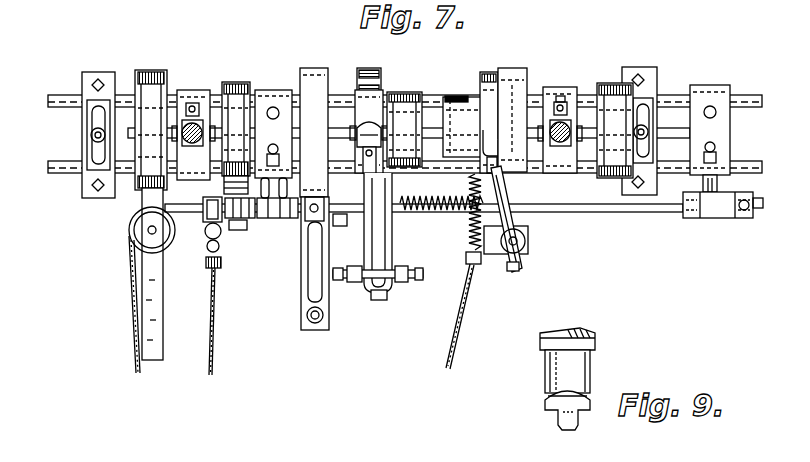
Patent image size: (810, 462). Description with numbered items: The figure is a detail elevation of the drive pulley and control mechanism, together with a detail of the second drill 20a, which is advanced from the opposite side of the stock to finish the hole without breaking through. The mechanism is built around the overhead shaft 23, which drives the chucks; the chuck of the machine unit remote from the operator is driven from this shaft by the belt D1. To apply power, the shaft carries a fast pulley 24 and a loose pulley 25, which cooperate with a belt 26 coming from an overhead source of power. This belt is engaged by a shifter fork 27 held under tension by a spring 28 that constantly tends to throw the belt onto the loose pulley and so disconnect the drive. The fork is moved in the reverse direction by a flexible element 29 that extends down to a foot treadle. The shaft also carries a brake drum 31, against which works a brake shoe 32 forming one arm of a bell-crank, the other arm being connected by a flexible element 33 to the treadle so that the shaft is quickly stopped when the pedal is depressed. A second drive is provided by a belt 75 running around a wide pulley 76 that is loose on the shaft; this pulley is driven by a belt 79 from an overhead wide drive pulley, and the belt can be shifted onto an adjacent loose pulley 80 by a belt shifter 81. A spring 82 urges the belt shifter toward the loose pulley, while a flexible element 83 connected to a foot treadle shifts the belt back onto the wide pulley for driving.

In FIG. 7, the shaft 23 is at (312, 125).
In FIG. 7, the fast pulley 24 is at (365, 112).
In FIG. 7, the loose pulley 25 is at (405, 110).
In FIG. 7, the belt 26 is at (368, 78).
In FIG. 7, the shifter fork 27 is at (380, 238).
In FIG. 7, the spring 28 is at (440, 197).
In FIG. 7, the flexible element 29 is at (133, 279).
In FIG. 7, the brake drum 31 is at (238, 84).
In FIG. 7, the brake shoe 32 is at (232, 186).
In FIG. 7, the flexible element 33 is at (213, 345).
In FIG. 7, the belt 75 is at (454, 104).
In FIG. 7, the wide pulley 76 is at (444, 96).
In FIG. 7, the belt 79 is at (487, 80).
In FIG. 7, the loose pulley 80 is at (518, 100).
In FIG. 7, the belt shifter 81 is at (511, 232).
In FIG. 7, the spring 82 is at (469, 228).
In FIG. 7, the flexible element 83 is at (455, 330).
In FIG. 7, the belt D1 is at (155, 327).
In FIG. 9, the drill 20a is at (552, 378).